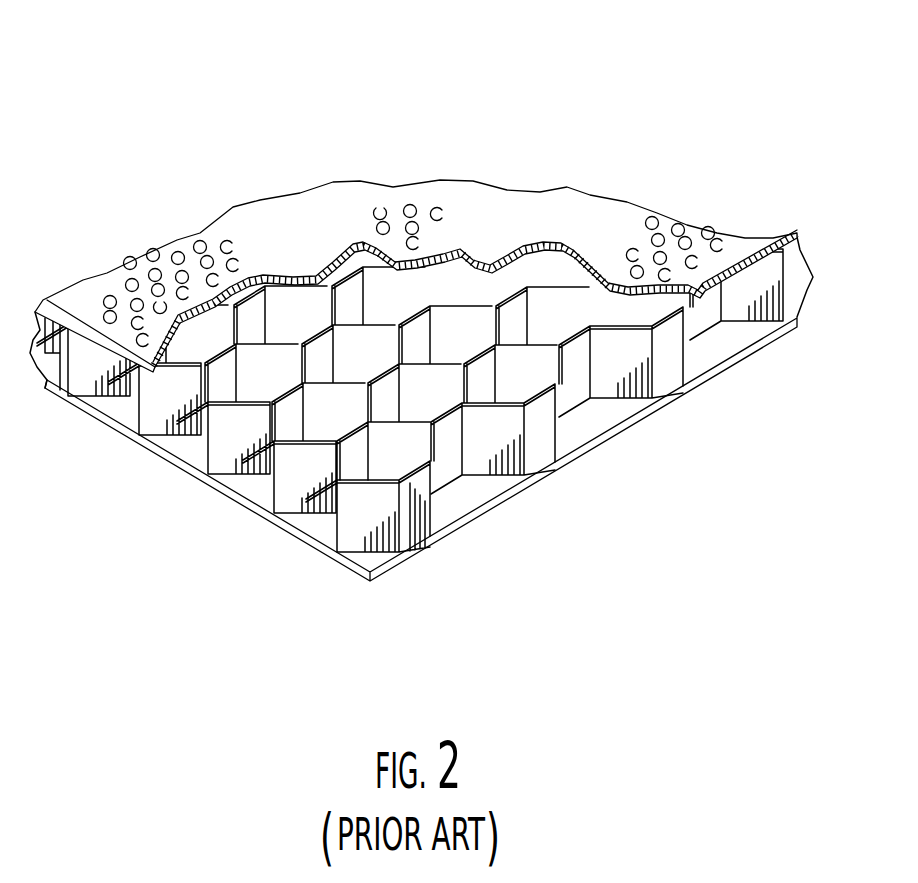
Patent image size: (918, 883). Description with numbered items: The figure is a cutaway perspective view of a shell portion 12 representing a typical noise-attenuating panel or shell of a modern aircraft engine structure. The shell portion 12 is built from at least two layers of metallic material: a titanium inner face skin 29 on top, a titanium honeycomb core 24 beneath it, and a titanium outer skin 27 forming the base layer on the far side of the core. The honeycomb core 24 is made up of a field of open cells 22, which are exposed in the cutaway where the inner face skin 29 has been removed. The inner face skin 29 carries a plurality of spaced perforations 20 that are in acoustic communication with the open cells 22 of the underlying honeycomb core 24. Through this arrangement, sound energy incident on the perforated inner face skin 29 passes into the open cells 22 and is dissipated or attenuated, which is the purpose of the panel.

The shell portion 12 is at (421, 314).
The perforations 20 is at (424, 261).
The open cells 22 is at (421, 426).
The honeycomb core 24 is at (360, 517).
The outer skin 27 is at (633, 427).
The inner face skin 29 is at (744, 250).